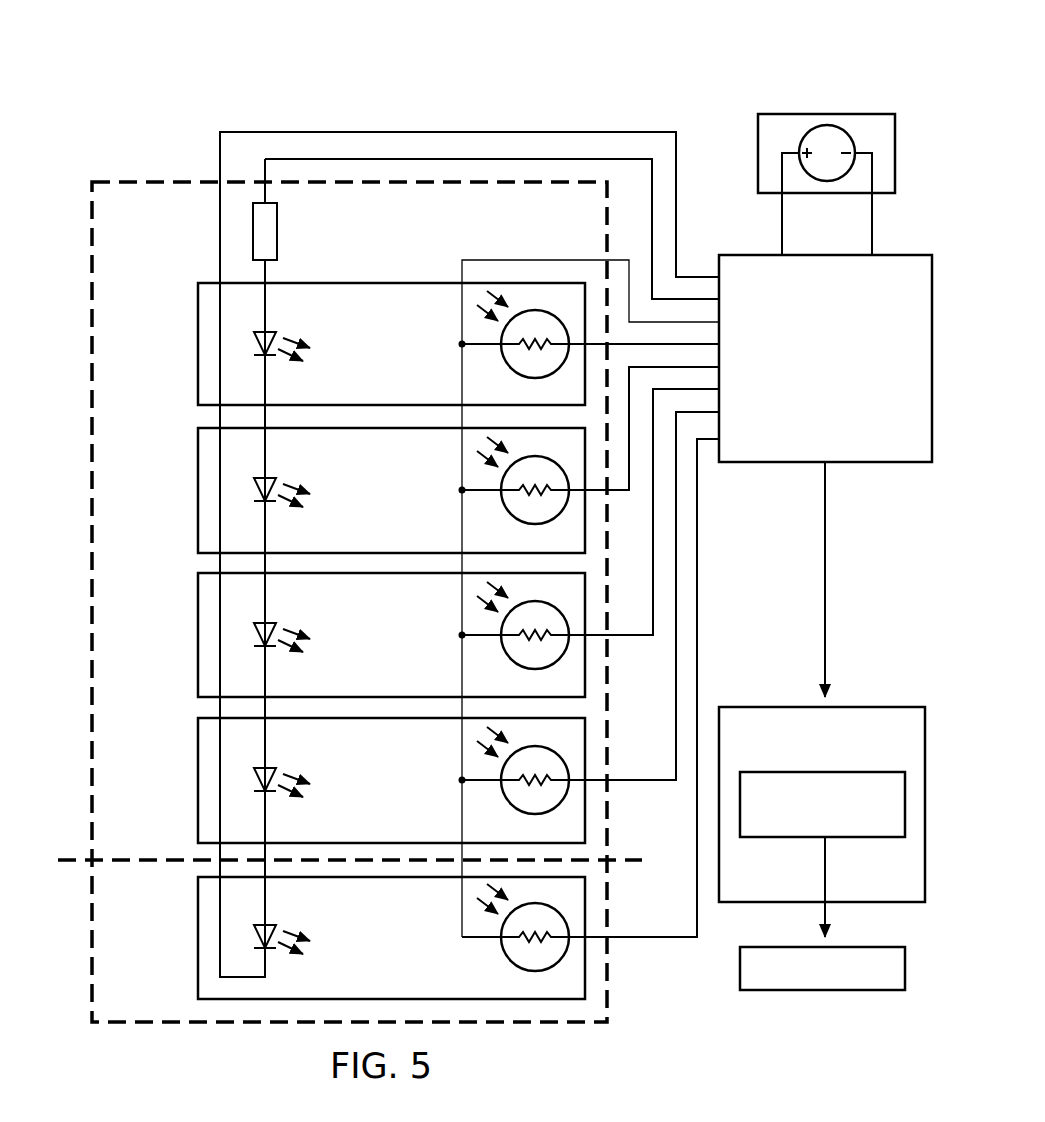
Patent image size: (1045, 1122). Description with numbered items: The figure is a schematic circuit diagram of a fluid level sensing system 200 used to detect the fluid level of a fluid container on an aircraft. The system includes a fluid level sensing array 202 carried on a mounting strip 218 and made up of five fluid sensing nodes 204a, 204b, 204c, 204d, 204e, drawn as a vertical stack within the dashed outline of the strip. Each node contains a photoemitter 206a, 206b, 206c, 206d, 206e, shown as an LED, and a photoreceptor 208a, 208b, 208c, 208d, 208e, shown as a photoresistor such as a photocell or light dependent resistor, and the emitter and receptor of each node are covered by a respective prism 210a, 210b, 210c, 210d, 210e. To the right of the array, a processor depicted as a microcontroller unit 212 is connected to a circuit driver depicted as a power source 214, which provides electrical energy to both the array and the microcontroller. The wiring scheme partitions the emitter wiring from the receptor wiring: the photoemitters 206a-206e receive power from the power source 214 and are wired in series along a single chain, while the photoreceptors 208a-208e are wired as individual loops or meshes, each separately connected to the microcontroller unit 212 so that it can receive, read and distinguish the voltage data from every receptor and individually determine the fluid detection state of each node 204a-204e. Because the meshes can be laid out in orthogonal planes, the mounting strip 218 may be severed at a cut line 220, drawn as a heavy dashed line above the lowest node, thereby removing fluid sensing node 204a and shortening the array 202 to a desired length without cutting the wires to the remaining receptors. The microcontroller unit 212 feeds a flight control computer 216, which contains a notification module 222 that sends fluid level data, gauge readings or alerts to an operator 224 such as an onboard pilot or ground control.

The fluid level sensing system 200 is at (180, 70).
The fluid level sensing array 202 is at (92, 215).
The mounting strip 218 is at (92, 270).
The fluid sensing node 204a is at (198, 922).
The fluid sensing node 204b is at (198, 764).
The fluid sensing node 204c is at (198, 614).
The fluid sensing node 204d is at (198, 469).
The fluid sensing node 204e is at (198, 322).
The photoemitter 206a is at (273, 925).
The photoemitter 206b is at (273, 768).
The photoemitter 206c is at (273, 623).
The photoemitter 206d is at (273, 478).
The photoemitter 206e is at (273, 332).
The photoreceptor 208a is at (510, 968).
The photoreceptor 208b is at (510, 811).
The photoreceptor 208c is at (510, 666).
The photoreceptor 208d is at (510, 521).
The photoreceptor 208e is at (510, 375).
The prism 210a is at (198, 969).
The prism 210b is at (198, 811).
The prism 210c is at (198, 661).
The prism 210d is at (198, 516).
The prism 210e is at (198, 369).
The microcontroller unit 212 is at (893, 464).
The power source 214 is at (825, 114).
The flight control computer 216 is at (880, 707).
The cut line 220 is at (58, 862).
The notification module 222 is at (860, 838).
The operator 224 is at (875, 991).